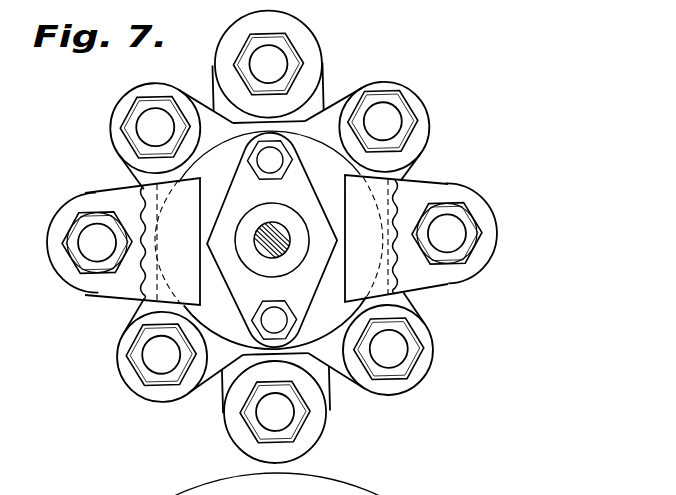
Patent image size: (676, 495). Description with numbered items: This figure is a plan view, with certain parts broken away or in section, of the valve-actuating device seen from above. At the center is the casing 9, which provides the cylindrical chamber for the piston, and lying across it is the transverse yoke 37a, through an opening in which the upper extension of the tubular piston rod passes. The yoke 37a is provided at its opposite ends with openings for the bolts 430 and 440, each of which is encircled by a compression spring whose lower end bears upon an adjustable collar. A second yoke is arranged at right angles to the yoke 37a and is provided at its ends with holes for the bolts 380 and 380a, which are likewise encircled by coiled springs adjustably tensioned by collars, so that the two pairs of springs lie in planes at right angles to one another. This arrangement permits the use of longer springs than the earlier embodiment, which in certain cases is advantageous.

The casing 9 is at (220, 152).
The bolt 380 is at (278, 62).
The bolt 380a is at (283, 422).
The bolt 440 is at (93, 237).
The bolt 430 is at (450, 227).
The yoke 37a is at (443, 158).